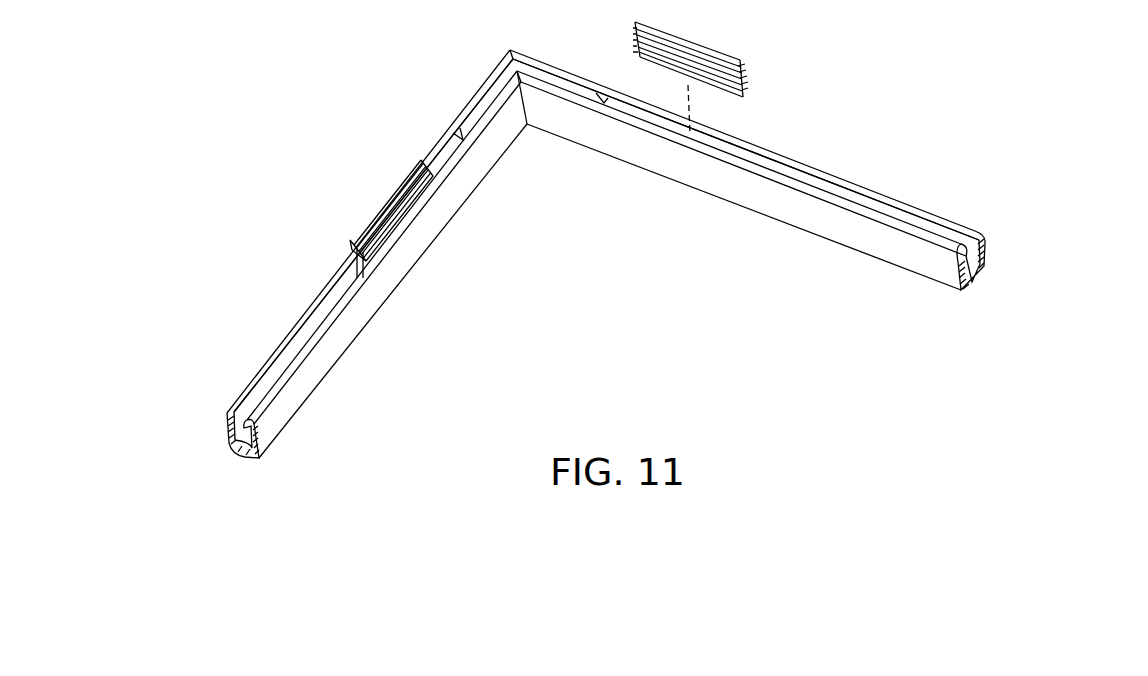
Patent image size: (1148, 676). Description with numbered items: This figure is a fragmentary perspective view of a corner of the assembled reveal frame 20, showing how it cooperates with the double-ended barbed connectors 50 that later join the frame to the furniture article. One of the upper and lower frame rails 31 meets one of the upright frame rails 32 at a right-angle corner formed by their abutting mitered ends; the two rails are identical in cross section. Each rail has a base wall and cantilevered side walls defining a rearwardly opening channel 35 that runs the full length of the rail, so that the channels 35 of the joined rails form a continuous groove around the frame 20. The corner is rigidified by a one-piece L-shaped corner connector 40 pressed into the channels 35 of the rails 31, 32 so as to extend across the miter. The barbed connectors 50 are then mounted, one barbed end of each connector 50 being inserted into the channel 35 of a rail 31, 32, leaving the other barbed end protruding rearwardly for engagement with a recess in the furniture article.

The reveal frame 20 is at (590, 231).
The upper and lower frame rails 31 is at (848, 230).
The upright frame rails 32 is at (335, 340).
The channel 35 is at (903, 215).
The corner connector 40 is at (485, 100).
The double-ended barbed connector 50 is at (370, 204).